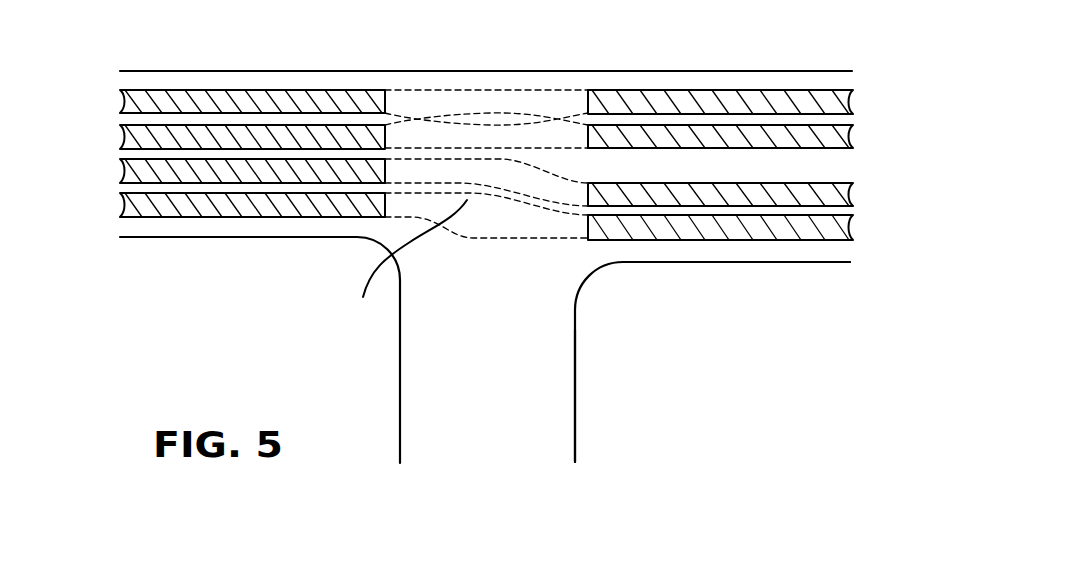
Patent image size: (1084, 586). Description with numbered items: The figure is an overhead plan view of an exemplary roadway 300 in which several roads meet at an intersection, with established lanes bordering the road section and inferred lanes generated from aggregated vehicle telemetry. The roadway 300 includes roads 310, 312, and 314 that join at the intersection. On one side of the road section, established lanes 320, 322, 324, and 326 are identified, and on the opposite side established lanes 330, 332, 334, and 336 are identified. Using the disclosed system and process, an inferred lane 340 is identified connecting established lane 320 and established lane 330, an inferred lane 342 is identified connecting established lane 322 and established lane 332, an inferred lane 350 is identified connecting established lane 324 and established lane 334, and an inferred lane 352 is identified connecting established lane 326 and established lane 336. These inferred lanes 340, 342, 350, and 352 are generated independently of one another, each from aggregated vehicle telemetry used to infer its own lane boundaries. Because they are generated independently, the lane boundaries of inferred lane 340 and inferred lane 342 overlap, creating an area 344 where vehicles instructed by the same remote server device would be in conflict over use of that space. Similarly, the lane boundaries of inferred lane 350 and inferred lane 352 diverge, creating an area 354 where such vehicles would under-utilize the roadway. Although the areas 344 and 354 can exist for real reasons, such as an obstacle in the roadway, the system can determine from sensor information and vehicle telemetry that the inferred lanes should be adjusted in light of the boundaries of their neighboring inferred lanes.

The roadway 300 is at (537, 349).
The road 310 is at (172, 225).
The road 312 is at (545, 405).
The road 314 is at (712, 247).
The established lane 320 is at (120, 103).
The established lane 322 is at (120, 139).
The established lane 324 is at (120, 173).
The established lane 326 is at (120, 207).
The established lane 330 is at (853, 104).
The established lane 332 is at (853, 137).
The established lane 334 is at (853, 195).
The established lane 336 is at (853, 228).
The inferred lane 340 is at (427, 104).
The inferred lane 342 is at (560, 133).
The area 344 is at (497, 117).
The inferred lane 350 is at (438, 173).
The inferred lane 352 is at (480, 230).
The area 354 is at (404, 261).